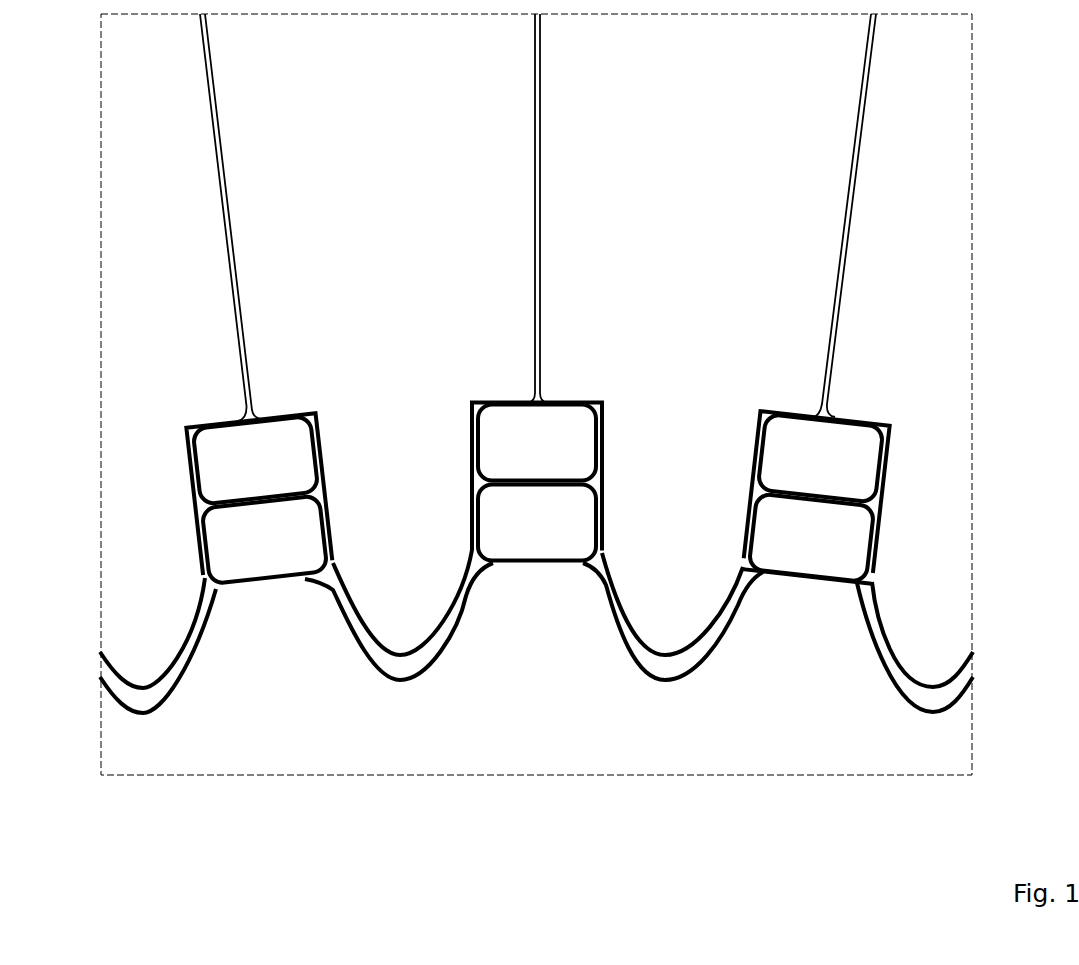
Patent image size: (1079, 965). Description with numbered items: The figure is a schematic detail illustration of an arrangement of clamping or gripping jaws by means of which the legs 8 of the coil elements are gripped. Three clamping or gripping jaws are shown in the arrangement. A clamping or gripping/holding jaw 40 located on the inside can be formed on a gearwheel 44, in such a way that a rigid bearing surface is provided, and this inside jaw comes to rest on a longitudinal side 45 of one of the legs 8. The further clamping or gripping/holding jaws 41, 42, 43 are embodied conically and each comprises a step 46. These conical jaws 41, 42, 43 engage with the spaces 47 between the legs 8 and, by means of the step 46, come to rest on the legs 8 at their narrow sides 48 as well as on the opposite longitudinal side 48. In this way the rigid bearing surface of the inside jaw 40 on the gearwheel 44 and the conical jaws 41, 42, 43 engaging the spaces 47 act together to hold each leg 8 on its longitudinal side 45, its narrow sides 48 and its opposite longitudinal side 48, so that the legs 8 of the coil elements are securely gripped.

The leg 8 is at (222, 463).
The clamping or gripping/holding jaw 40 is at (762, 648).
The clamping or gripping/holding jaw 41 is at (201, 217).
The clamping or gripping/holding jaw 42 is at (487, 287).
The clamping or gripping/holding jaw 43 is at (781, 216).
The gearwheel 44 is at (520, 633).
The longitudinal side 45 is at (833, 583).
The step 46 is at (883, 432).
The space 47 is at (400, 550).
The narrow side 48 is at (883, 476).